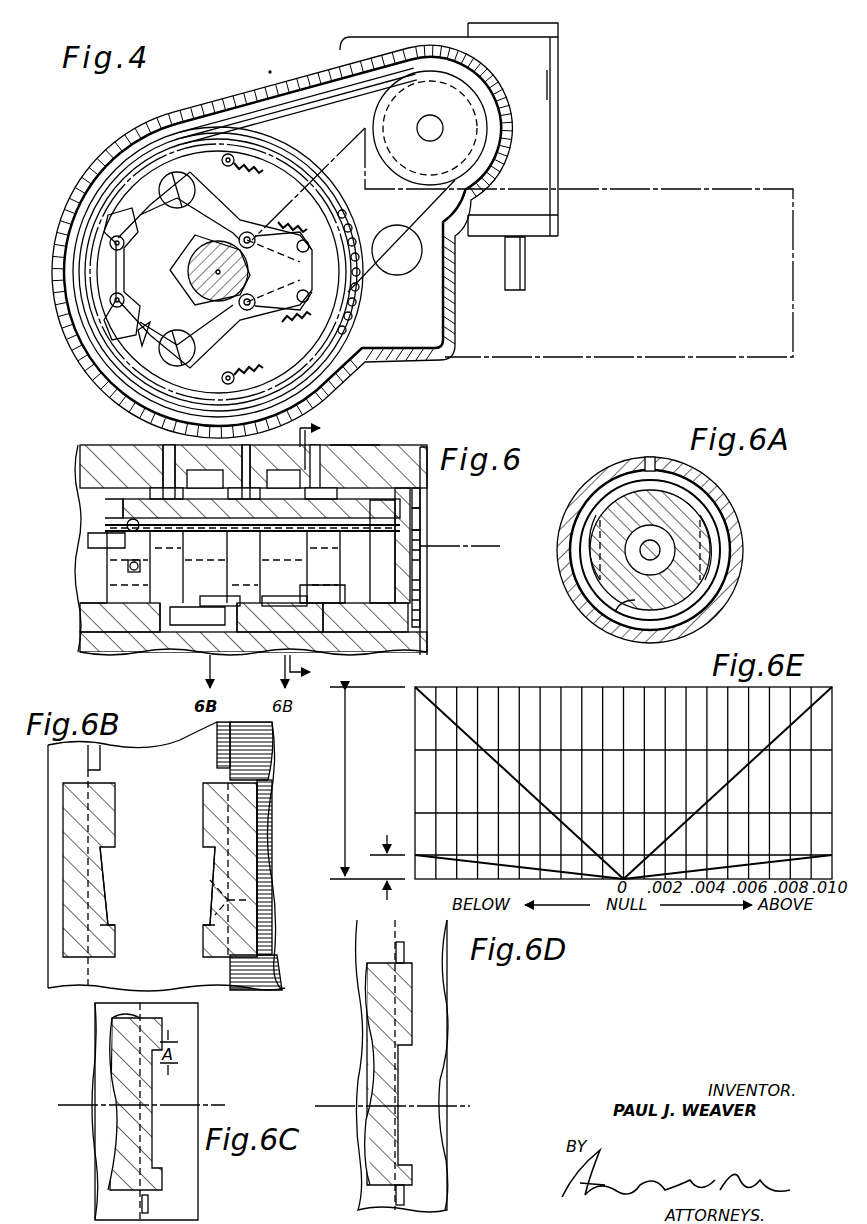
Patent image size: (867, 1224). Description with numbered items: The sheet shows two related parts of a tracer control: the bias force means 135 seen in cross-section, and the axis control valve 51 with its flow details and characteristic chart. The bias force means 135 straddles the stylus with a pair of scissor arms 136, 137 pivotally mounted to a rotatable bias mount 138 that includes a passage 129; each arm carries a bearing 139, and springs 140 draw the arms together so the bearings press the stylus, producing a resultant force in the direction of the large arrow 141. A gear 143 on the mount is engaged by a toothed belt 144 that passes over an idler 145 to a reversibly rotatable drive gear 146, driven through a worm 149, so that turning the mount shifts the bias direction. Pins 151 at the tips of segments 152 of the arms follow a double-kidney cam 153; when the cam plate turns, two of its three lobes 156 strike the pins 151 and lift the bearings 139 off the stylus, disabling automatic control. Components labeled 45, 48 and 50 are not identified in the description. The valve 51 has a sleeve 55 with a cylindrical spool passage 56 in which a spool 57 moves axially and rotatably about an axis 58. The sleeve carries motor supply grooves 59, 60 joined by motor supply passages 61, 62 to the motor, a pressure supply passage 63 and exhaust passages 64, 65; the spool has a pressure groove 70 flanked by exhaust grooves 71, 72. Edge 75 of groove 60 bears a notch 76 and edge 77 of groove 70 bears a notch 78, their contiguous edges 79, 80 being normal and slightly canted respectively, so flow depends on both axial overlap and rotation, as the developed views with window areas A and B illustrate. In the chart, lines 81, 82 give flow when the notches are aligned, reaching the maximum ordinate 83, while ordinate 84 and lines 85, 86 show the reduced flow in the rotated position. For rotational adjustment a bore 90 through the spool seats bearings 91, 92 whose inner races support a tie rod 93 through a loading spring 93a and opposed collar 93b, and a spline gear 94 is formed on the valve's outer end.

In FIG. 4, the drive assembly 45 is at (270, 70).
In FIG. 4, the shaft 48 is at (186, 272).
In FIG. 4, the housing 50 is at (457, 330).
In FIG. 6, the valve 51 is at (398, 452).
In FIG. 6, the sleeve 55 is at (420, 625).
In FIG. 6A, the sleeve 55 is at (742, 578).
In FIG. 6B, the sleeve 55 is at (50, 840).
In FIG. 6, the cylindrical spool passage 56 is at (80, 600).
In FIG. 6A, the cylindrical spool passage 56 is at (615, 615).
In FIG. 6, the spool 57 is at (108, 505).
In FIG. 6, the axis 58 is at (478, 546).
In FIG. 6C, the axis 58 is at (82, 1105).
In FIG. 6D, the axis 58 is at (340, 1106).
In FIG. 6, the motor supply groove 59 is at (190, 618).
In FIG. 6B, the motor supply groove 59 is at (81, 866).
In FIG. 6C, the motor supply groove 59 is at (145, 1111).
In FIG. 6, the motor supply groove 60 is at (270, 622).
In FIG. 6A, the motor supply groove 60 is at (700, 505).
In FIG. 6B, the motor supply groove 60 is at (262, 750).
In FIG. 6, the motor supply passage 61 is at (242, 458).
In FIG. 6, the motor supply passage 62 is at (305, 445).
In FIG. 6A, the motor supply passage 62 is at (650, 458).
In FIG. 6, the pressure supply passage 63 is at (165, 450).
In FIG. 6, the exhaust passage 64 is at (82, 474).
In FIG. 6, the exhaust passage 65 is at (350, 446).
In FIG. 6, the pressure groove 70 is at (240, 622).
In FIG. 6B, the pressure groove 70 is at (200, 810).
In FIG. 6, the exhaust groove 71 is at (160, 615).
In FIG. 6, the exhaust groove 72 is at (322, 600).
In FIG. 6B, the edge 75 is at (250, 988).
In FIG. 6A, the notch 76 is at (600, 510).
In FIG. 6B, the notch 76 is at (225, 740).
In FIG. 6C, the notch 76 is at (135, 1030).
In FIG. 6B, the edge 77 is at (118, 942).
In FIG. 6A, the notch 78 is at (584, 578).
In FIG. 6B, the notch 78 is at (106, 892).
In FIG. 6C, the notch 78 is at (152, 1082).
In FIG. 6B, the edge 79 is at (258, 905).
In FIG. 6B, the edge 80 is at (212, 892).
In FIG. 6E, the line 81 is at (462, 728).
In FIG. 6E, the line 82 is at (808, 700).
In FIG. 6E, the ordinate 83 is at (348, 775).
In FIG. 6E, the ordinate 84 is at (387, 867).
In FIG. 6E, the line 85 is at (448, 855).
In FIG. 6E, the line 86 is at (800, 855).
In FIG. 6, the bore 90 is at (140, 545).
In FIG. 6, the bearing 91 is at (122, 520).
In FIG. 6, the bearing 92 is at (380, 510).
In FIG. 6, the tie rod 93 is at (110, 540).
In FIG. 6, the loading spring 93a is at (412, 522).
In FIG. 6, the opposed collar 93b is at (412, 570).
In FIG. 6, the spline gear 94 is at (422, 488).
In FIG. 4, the passage 129 is at (118, 238).
In FIG. 4, the bias force means 135 is at (78, 158).
In FIG. 4, the scissor arm 136 is at (212, 122).
In FIG. 4, the scissor arm 137 is at (160, 405).
In FIG. 4, the rotatable bias mount 138 is at (140, 155).
In FIG. 4, the bearing 139 is at (250, 236).
In FIG. 4, the spring 140 is at (250, 175).
In FIG. 4, the large arrow 141 is at (612, 189).
In FIG. 4, the gear 143 is at (348, 240).
In FIG. 4, the toothed belt 144 is at (457, 242).
In FIG. 4, the idler 145 is at (397, 250).
In FIG. 4, the drive gear 146 is at (488, 128).
In FIG. 4, the worm 149 is at (540, 32).
In FIG. 4, the pin 151 is at (110, 252).
In FIG. 4, the segment 152 is at (92, 212).
In FIG. 4, the double-kidney cam 153 is at (138, 330).
In FIG. 4, the lobe 156 is at (108, 228).